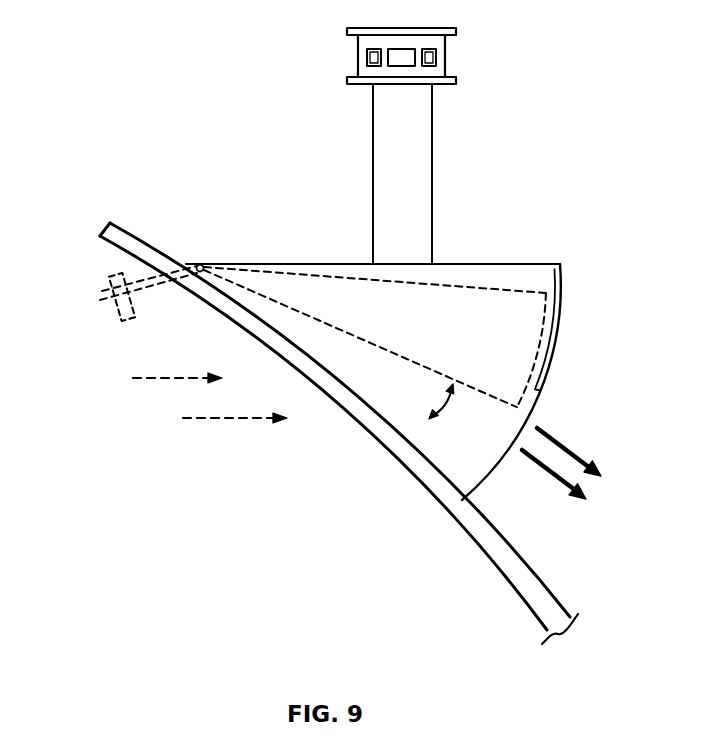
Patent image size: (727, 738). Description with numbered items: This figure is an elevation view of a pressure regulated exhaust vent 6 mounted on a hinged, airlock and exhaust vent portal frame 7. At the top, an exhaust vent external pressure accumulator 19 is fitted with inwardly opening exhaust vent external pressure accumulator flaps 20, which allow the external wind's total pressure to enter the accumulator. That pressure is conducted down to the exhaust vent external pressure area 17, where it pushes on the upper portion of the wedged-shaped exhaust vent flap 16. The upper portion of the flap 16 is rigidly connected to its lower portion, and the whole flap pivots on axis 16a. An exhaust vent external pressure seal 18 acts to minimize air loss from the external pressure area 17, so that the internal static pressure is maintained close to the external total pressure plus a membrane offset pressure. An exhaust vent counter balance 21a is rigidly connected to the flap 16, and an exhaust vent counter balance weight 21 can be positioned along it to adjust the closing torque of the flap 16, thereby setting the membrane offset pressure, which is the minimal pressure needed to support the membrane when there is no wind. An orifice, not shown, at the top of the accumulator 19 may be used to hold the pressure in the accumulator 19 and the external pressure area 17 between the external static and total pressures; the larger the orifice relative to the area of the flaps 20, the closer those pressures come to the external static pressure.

The pressure regulated exhaust vent 6 is at (515, 260).
The hinged, airlock and exhaust vent portal frame 7 is at (488, 563).
The wedged-shaped exhaust vent flap 16 is at (510, 333).
The axis 16a is at (203, 262).
The exhaust vent external pressure area 17 is at (538, 280).
The exhaust vent external pressure seal 18 is at (557, 320).
The exhaust vent external pressure accumulator 19 is at (448, 57).
The exhaust vent external pressure accumulator flap 20 is at (402, 57).
The exhaust vent counter balance weight 21 is at (108, 288).
The exhaust vent counter balance 21a is at (100, 302).